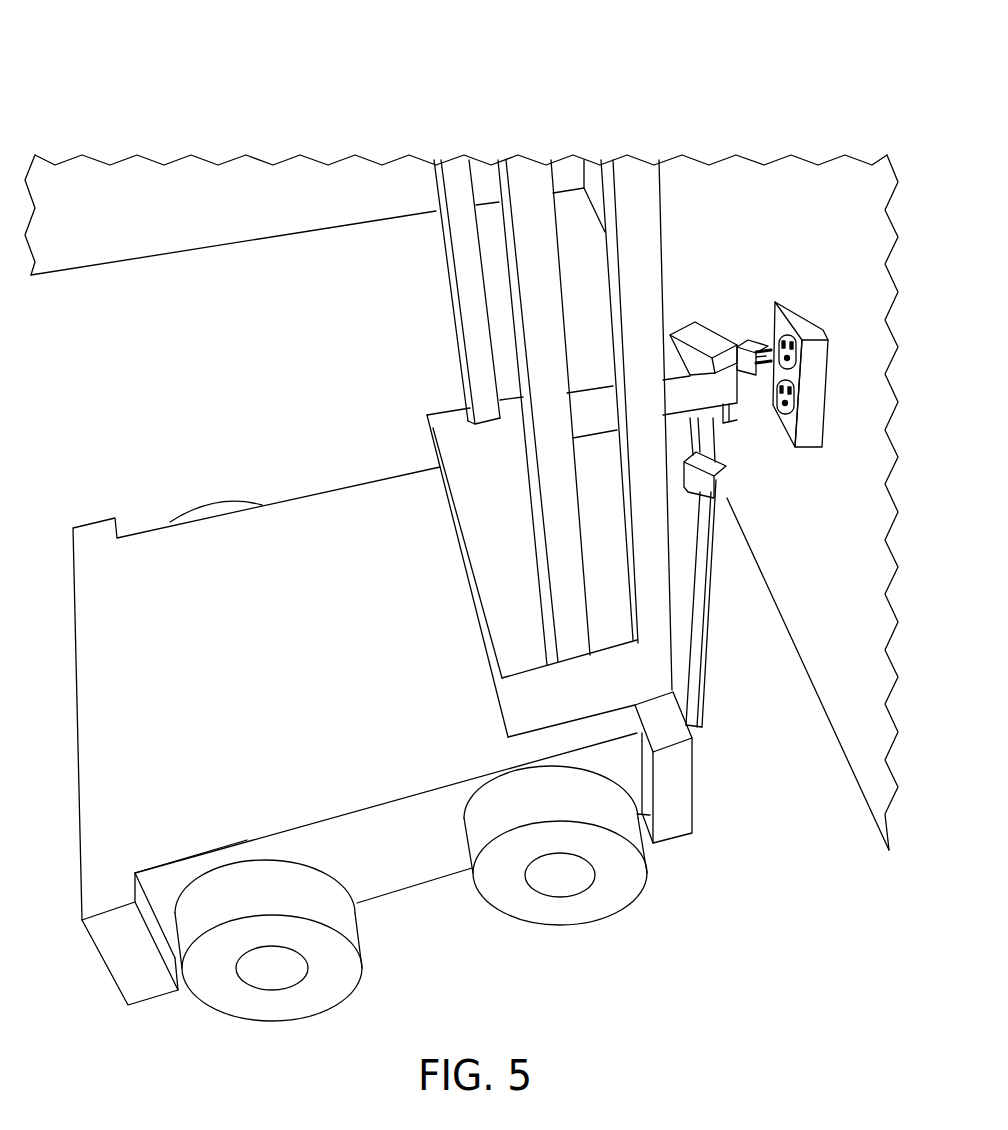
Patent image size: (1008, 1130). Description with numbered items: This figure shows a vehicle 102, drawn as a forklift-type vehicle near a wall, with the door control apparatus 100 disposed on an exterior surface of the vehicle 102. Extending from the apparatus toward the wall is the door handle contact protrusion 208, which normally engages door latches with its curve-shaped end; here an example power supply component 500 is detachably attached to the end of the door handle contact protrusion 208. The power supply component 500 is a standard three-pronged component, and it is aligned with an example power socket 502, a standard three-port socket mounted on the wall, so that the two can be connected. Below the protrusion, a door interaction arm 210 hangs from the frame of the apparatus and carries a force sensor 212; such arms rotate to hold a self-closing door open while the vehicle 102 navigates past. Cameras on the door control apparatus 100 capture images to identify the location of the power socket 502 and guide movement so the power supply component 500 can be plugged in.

The door control apparatus 100 is at (461, 515).
The vehicle 102 is at (382, 590).
The door handle contact protrusion 208 is at (691, 336).
The door interaction arms 210 is at (703, 652).
The force sensor 212 is at (706, 482).
The power supply component 500 is at (743, 383).
The power socket 502 is at (802, 316).